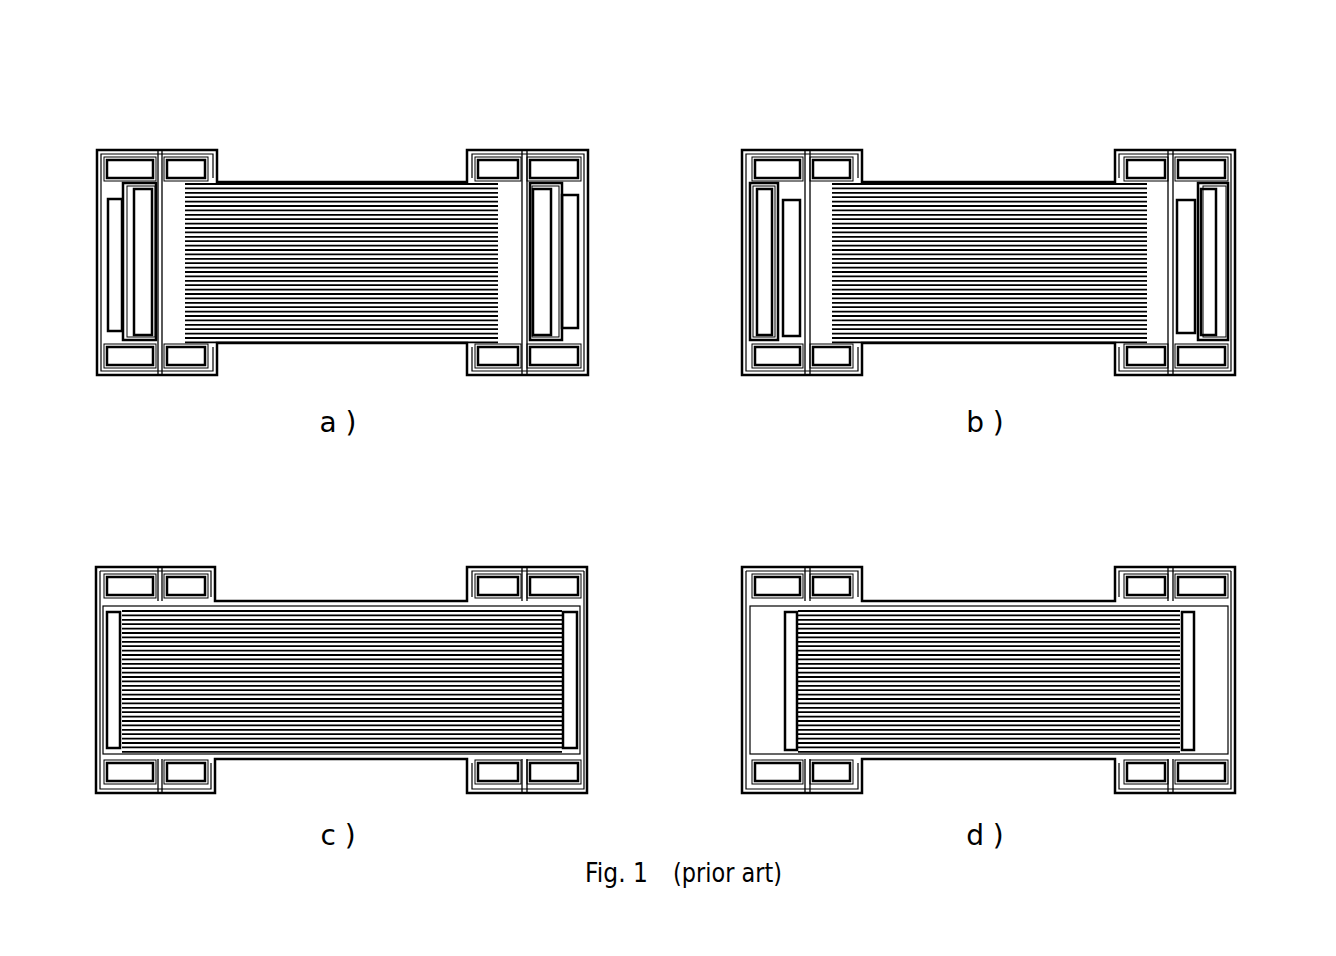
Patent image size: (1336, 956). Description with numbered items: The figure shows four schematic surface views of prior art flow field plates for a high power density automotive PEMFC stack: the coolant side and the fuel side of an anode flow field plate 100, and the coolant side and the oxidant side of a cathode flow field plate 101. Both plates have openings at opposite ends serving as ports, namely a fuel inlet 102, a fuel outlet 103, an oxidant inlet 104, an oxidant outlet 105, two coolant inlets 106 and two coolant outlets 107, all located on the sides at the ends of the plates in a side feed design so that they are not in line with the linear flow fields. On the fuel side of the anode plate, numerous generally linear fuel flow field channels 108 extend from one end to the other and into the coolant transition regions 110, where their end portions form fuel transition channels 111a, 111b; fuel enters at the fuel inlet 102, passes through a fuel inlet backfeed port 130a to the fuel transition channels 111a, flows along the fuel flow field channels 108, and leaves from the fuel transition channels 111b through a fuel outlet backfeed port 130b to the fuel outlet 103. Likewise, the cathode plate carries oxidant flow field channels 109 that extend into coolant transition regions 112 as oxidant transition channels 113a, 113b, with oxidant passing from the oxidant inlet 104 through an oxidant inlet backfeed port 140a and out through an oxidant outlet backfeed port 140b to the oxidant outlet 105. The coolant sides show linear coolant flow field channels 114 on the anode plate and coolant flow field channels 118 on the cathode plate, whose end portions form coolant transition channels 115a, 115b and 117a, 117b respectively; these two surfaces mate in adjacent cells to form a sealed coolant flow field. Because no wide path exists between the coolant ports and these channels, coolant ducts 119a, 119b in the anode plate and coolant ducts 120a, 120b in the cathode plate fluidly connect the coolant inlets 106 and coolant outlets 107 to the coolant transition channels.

The anode flow field plate 100 is at (606, 182).
The cathode flow field plate 101 is at (1254, 182).
The fuel inlet 102 is at (128, 160).
The fuel outlet 103 is at (552, 365).
The oxidant inlet 104 is at (128, 365).
The oxidant outlet 105 is at (552, 160).
The coolant inlet 106 is at (185, 160).
The coolant outlet 107 is at (497, 160).
The fuel flow field channels 108 is at (338, 610).
The oxidant flow field channels 109 is at (990, 610).
The coolant transition regions 110 is at (160, 107).
The fuel transition channels 111a is at (222, 692).
The fuel transition channels 111b is at (460, 692).
The coolant transition regions 112 is at (862, 107).
The oxidant transition channels 113a is at (1107, 692).
The oxidant transition channels 113b is at (872, 692).
The coolant flow field channels 114 is at (336, 185).
The coolant transition channels 115a is at (222, 275).
The coolant transition channels 115b is at (460, 275).
The coolant transition channels 117a is at (1107, 275).
The coolant transition channels 117b is at (872, 275).
The coolant flow field channels 118 is at (993, 185).
The coolant duct 119a is at (178, 234).
The coolant duct 119b is at (505, 234).
The coolant duct 120a is at (1155, 234).
The coolant duct 120b is at (825, 234).
The fuel inlet backfeed port 130a is at (107, 260).
The fuel outlet backfeed port 130b is at (573, 262).
The oxidant inlet backfeed port 140a is at (1190, 262).
The oxidant outlet backfeed port 140b is at (783, 262).